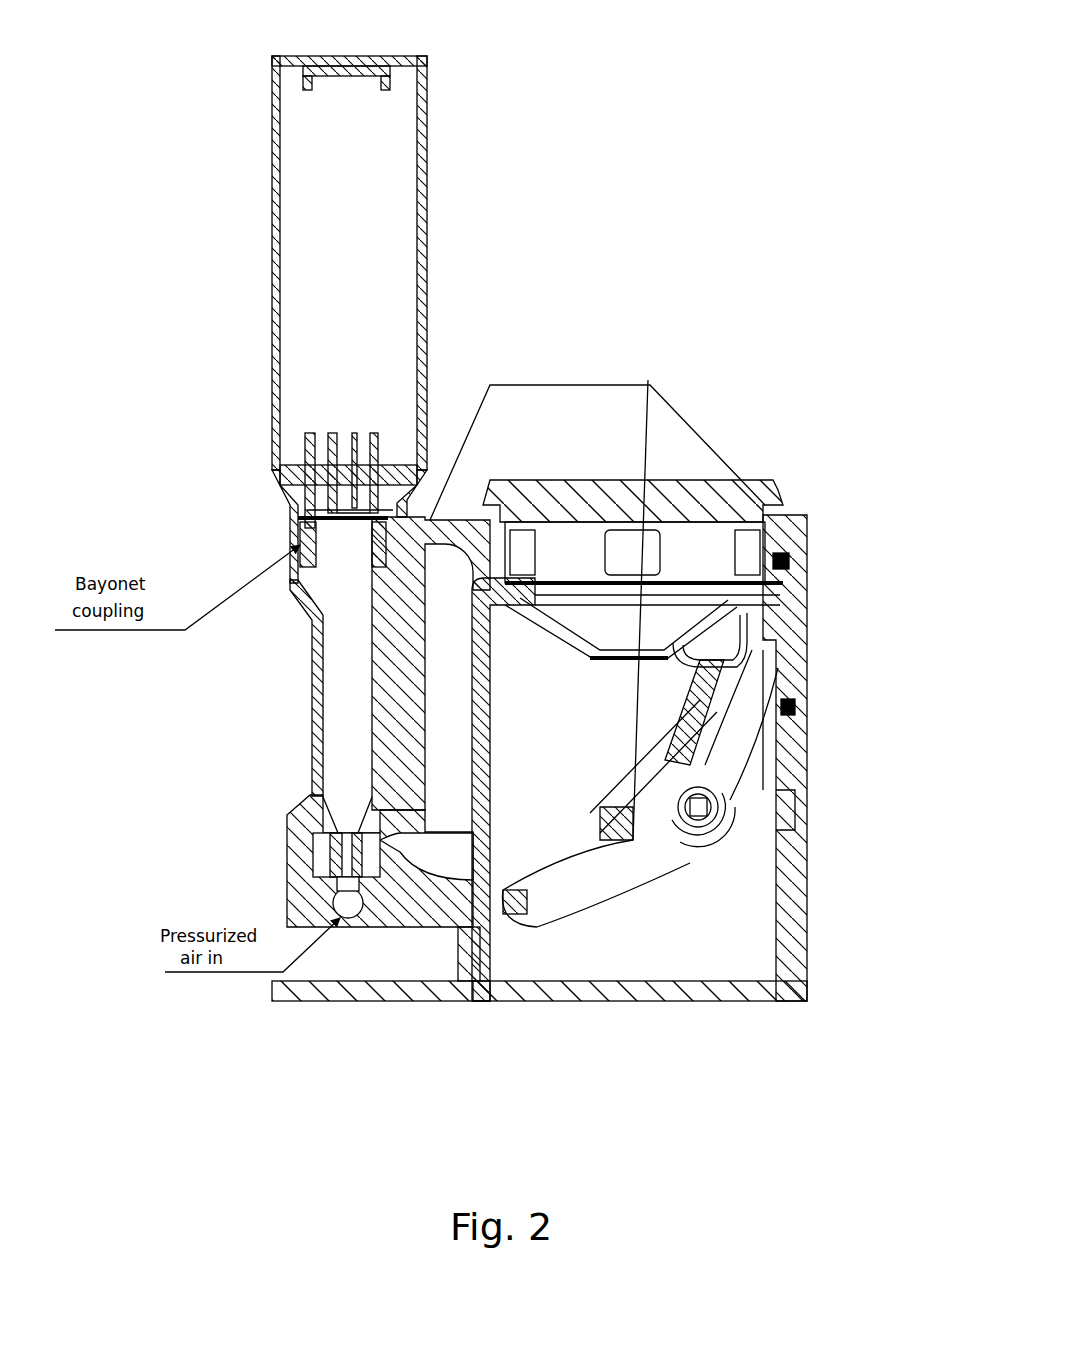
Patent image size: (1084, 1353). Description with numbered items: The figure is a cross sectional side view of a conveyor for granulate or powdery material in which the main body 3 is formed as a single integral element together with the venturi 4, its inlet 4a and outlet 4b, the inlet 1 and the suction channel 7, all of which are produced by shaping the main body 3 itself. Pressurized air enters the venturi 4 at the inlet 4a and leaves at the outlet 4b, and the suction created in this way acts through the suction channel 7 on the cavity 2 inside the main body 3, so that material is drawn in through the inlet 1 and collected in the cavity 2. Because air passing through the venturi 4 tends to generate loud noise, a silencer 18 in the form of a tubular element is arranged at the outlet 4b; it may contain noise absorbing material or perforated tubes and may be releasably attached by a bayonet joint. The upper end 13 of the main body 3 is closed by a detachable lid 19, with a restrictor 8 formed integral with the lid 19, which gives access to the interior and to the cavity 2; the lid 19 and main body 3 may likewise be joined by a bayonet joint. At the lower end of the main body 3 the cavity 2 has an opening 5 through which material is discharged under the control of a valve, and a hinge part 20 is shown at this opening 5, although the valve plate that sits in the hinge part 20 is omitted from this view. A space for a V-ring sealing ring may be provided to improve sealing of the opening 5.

The inlet 1 is at (718, 632).
The cavity 2 is at (548, 775).
The main body 3 is at (815, 600).
The venturi 4 is at (323, 852).
The inlet of the venturi 4a is at (333, 903).
The outlet of the venturi 4b is at (340, 541).
The opening 5 is at (570, 868).
The suction channel 7 is at (447, 694).
The restrictor 8 is at (695, 643).
The upper end 13 is at (843, 457).
The silencer 18 is at (250, 255).
The lid 19 is at (775, 473).
The hinge part 20 is at (735, 825).